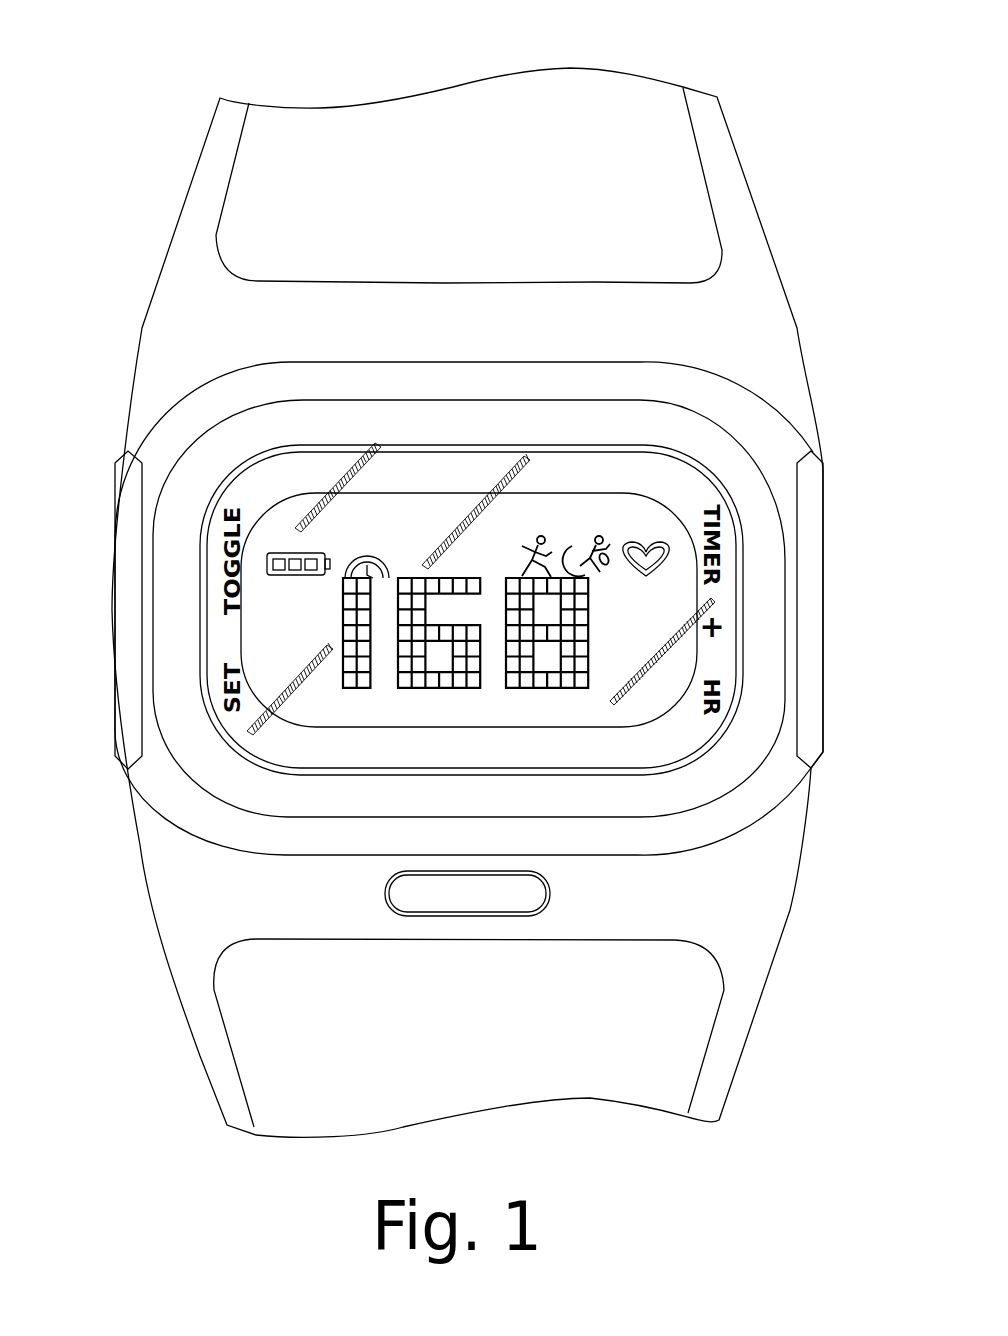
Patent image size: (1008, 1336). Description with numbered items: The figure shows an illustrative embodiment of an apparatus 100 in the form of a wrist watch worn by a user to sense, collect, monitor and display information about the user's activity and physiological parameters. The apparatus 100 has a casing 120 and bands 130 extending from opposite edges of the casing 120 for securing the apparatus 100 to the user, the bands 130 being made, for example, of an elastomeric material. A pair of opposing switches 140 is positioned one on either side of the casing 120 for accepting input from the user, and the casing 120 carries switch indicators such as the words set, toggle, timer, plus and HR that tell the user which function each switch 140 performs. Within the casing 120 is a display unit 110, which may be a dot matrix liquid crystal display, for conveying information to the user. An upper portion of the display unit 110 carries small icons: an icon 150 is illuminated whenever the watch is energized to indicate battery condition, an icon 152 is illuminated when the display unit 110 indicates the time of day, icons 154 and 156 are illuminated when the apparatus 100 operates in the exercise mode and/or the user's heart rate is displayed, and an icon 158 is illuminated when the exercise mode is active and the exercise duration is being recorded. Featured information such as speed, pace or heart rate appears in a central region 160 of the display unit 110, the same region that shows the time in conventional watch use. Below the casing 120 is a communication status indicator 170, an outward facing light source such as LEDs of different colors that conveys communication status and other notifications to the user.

The apparatus 100 is at (455, 594).
The display unit 110 is at (542, 635).
The casing 120 is at (500, 590).
The band 130 is at (469, 596).
The switch 140 is at (455, 610).
The icon 150 is at (174, 550).
The icon 152 is at (217, 524).
The icon 154 is at (716, 508).
The icon 156 is at (767, 577).
The icon 158 is at (739, 539).
The central region 160 is at (396, 648).
The communication status indicator 170 is at (312, 931).